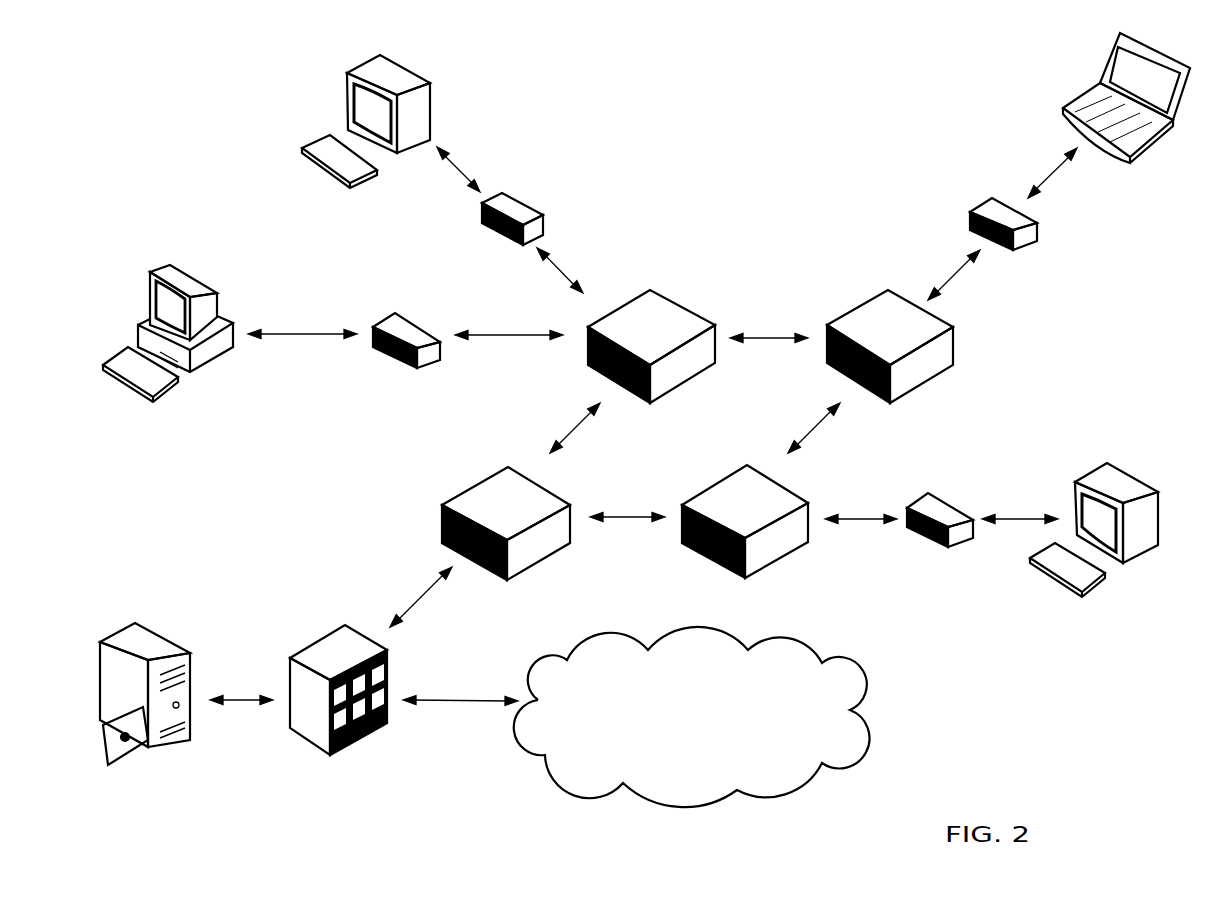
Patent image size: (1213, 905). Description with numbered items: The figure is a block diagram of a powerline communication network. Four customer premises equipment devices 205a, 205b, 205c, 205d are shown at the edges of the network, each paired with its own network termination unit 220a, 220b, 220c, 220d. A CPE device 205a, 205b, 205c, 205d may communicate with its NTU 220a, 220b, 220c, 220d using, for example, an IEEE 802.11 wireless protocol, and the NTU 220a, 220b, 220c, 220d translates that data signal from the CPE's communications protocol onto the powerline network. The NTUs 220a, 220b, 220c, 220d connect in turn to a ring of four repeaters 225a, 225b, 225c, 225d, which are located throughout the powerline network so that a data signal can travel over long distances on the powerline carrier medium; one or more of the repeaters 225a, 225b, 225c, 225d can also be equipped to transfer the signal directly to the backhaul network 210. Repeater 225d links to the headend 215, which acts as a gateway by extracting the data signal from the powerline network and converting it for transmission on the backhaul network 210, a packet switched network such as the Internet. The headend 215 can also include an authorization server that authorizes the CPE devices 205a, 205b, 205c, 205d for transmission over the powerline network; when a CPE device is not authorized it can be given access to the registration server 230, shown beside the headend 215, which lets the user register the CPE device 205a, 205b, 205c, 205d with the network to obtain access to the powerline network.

The customer premises equipment (CPE) device 205a is at (203, 273).
The customer premises equipment (CPE) device 205b is at (428, 85).
The customer premises equipment (CPE) device 205c is at (1088, 89).
The customer premises equipment (CPE) device 205d is at (1119, 468).
The network termination unit (NTU) 220a is at (407, 315).
The network termination unit (NTU) 220b is at (529, 200).
The network termination unit (NTU) 220c is at (1030, 246).
The network termination unit (NTU) 220d is at (942, 498).
The repeater 225a is at (676, 302).
The repeater 225b is at (867, 303).
The repeater 225c is at (786, 484).
The repeater 225d is at (549, 486).
The registration server 230 is at (151, 627).
The headend 215 is at (327, 636).
The backhaul network 210 is at (833, 661).